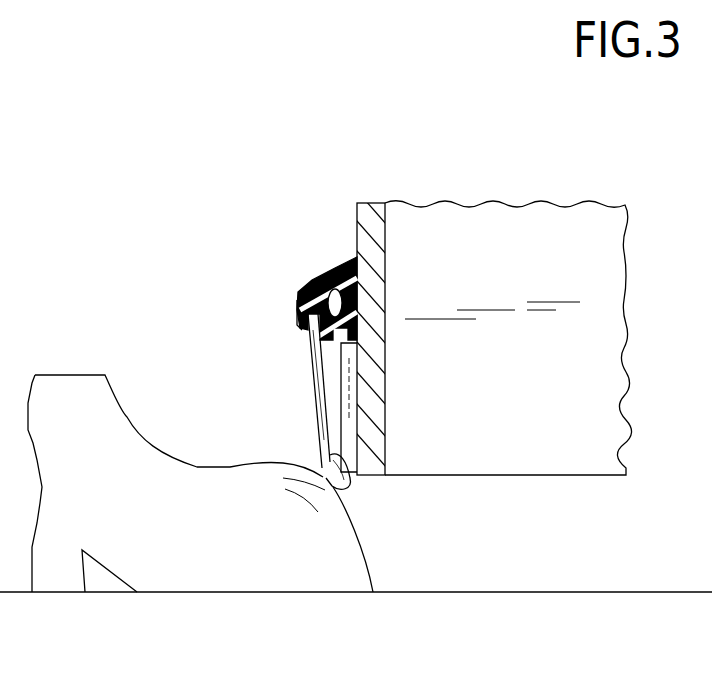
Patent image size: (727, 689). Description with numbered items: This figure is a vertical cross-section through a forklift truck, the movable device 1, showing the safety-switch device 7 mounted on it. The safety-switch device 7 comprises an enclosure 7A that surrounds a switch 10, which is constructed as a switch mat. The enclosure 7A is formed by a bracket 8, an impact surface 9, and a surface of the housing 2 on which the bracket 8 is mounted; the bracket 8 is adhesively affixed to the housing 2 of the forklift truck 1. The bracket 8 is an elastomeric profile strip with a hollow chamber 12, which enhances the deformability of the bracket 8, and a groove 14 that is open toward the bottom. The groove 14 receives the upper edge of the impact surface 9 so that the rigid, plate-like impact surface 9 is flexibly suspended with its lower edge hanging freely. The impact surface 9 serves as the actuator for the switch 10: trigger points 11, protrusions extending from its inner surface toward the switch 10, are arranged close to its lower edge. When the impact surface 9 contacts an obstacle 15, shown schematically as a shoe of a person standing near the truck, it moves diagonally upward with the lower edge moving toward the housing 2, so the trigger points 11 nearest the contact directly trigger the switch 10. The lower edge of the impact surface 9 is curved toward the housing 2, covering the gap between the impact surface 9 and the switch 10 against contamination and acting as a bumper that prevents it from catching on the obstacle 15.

The movable device 1 is at (272, 100).
The housing 2 is at (372, 218).
The safety-switch device 7 is at (195, 198).
The enclosure 7A is at (218, 316).
The bracket 8 is at (329, 254).
The impact surface 9 is at (322, 452).
The switch 10 is at (348, 450).
The trigger points 11 is at (323, 478).
The hollow chamber 12 is at (337, 305).
The groove 14 is at (292, 310).
The obstacle 15 is at (187, 532).